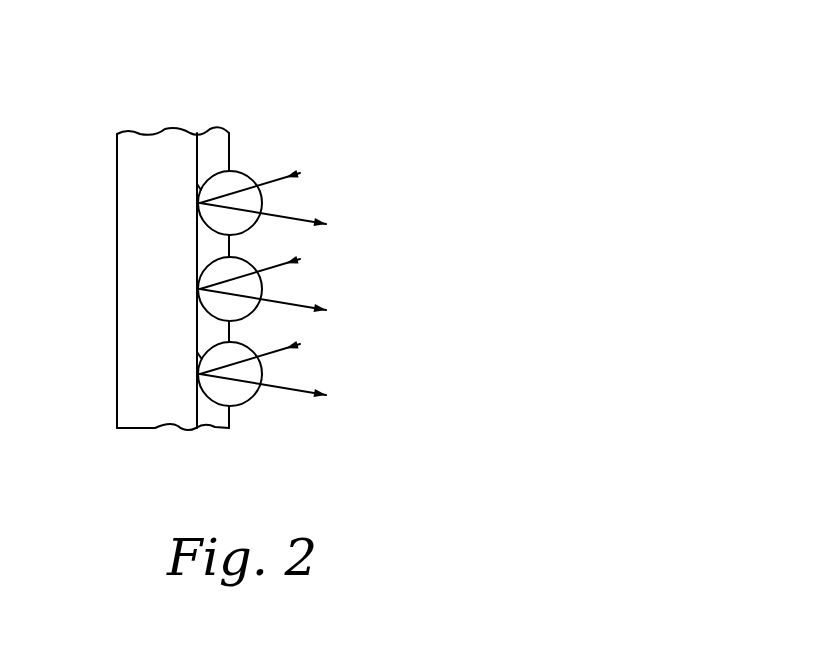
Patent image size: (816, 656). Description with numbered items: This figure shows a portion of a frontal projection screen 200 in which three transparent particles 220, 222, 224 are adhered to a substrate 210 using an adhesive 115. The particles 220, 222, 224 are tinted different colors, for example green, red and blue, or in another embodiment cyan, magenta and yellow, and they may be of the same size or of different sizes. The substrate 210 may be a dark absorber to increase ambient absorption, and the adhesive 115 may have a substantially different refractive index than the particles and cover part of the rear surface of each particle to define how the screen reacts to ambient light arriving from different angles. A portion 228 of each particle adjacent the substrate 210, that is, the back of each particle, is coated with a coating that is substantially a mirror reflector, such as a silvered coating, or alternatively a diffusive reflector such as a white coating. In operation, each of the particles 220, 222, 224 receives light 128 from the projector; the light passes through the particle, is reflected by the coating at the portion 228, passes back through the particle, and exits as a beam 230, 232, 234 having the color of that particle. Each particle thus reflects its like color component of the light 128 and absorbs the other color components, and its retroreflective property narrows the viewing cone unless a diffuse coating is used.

The frontal projection screen 200 is at (292, 88).
The adhesive 115 is at (212, 137).
The substrate 210 is at (178, 276).
The transparent particle 220 is at (251, 178).
The transparent particle 222 is at (248, 262).
The transparent particle 224 is at (246, 403).
The portion of particle adjacent substrate 228 is at (202, 186).
The light 128 is at (280, 180).
The beam 230 is at (258, 218).
The beam 232 is at (258, 304).
The beam 234 is at (258, 389).